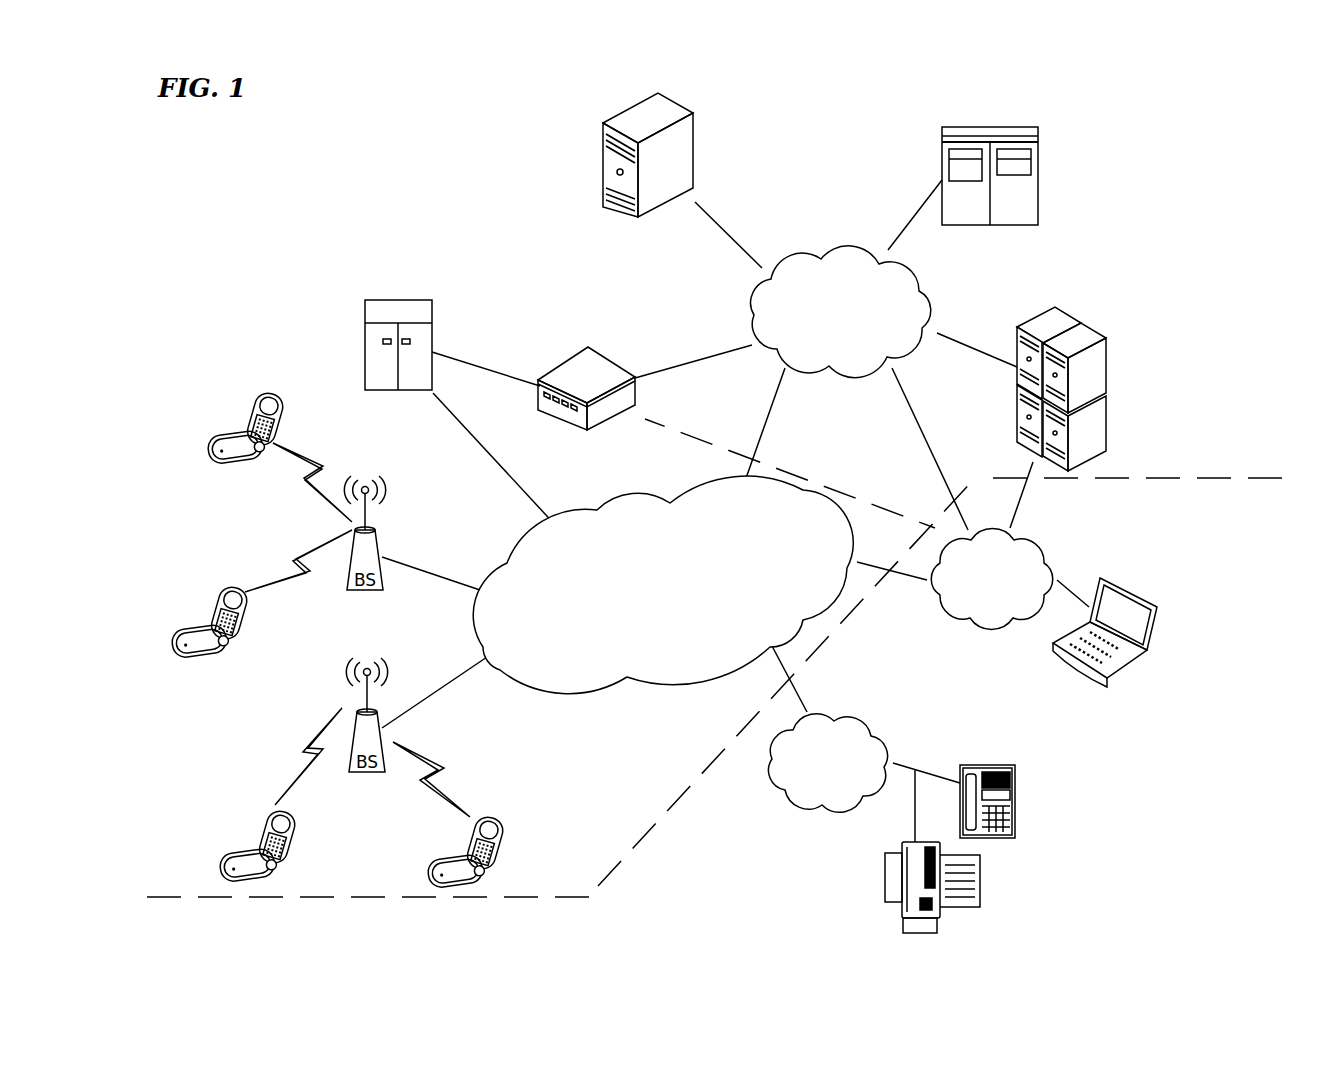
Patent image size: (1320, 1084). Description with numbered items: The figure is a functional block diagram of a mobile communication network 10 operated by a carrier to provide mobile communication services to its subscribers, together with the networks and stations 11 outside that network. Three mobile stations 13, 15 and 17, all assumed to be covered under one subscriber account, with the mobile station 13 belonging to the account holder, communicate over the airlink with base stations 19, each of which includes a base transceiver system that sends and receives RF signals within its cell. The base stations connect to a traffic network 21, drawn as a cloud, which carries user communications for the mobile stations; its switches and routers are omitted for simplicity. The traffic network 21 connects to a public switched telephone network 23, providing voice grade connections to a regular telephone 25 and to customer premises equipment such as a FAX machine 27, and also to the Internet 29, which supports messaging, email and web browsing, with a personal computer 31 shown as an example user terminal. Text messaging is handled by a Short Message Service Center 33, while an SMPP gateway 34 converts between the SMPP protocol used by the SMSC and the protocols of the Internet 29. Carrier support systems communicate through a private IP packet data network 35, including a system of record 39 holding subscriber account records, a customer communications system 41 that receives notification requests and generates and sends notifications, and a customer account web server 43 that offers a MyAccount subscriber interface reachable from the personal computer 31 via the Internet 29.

The mobile communication network 10 is at (386, 184).
The networks and stations outside the mobile communication network 11 is at (719, 658).
The mobile station 13 is at (243, 407).
The mobile station 15 is at (233, 852).
The mobile station 17 is at (494, 822).
The base station 19 is at (373, 525).
The traffic network 21 is at (642, 690).
The public switched telephone network 23 is at (785, 800).
The telephone 25 is at (1017, 786).
The FAX machine 27 is at (885, 882).
The Internet 29 is at (1048, 555).
The personal computer 31 is at (1132, 592).
The Short Message Service Center 33 is at (364, 350).
The Short Message Peer-to-Peer protocol gateway 34 is at (578, 353).
The private IP packet data network 35 is at (742, 330).
The system of record 39 is at (603, 167).
The customer communications system 41 is at (989, 128).
The customer account web server 43 is at (1080, 321).